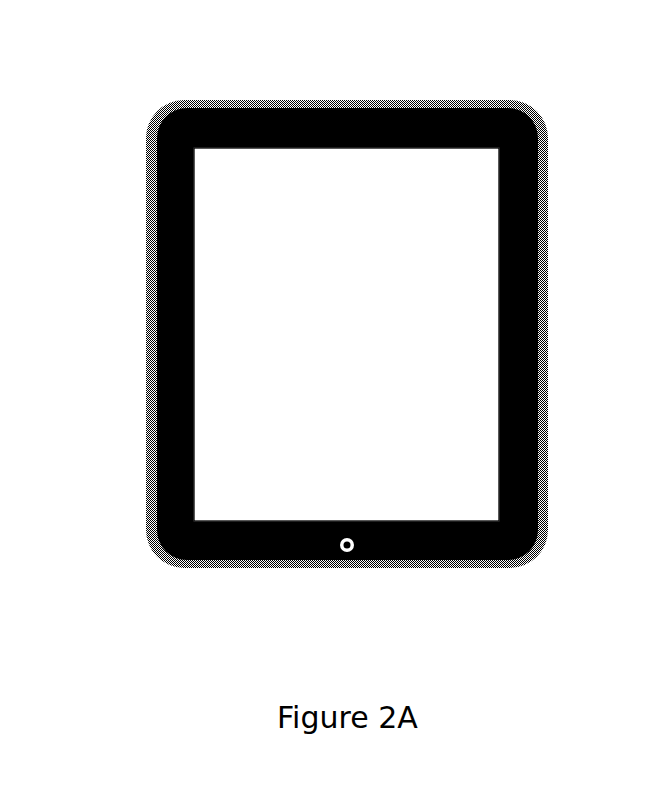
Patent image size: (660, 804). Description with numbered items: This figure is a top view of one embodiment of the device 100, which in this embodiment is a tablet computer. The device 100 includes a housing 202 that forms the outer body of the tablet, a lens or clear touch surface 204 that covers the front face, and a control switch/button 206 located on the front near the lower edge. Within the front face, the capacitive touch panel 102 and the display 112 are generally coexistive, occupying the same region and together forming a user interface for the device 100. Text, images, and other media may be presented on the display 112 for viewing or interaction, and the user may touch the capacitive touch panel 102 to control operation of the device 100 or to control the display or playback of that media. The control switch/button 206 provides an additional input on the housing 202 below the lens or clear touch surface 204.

The device 100 is at (348, 330).
The capacitive touch panel 102 is at (217, 175).
The display 112 is at (477, 258).
The housing 202 is at (530, 557).
The lens or clear touch surface 204 is at (439, 507).
The control switch/button 206 is at (347, 553).